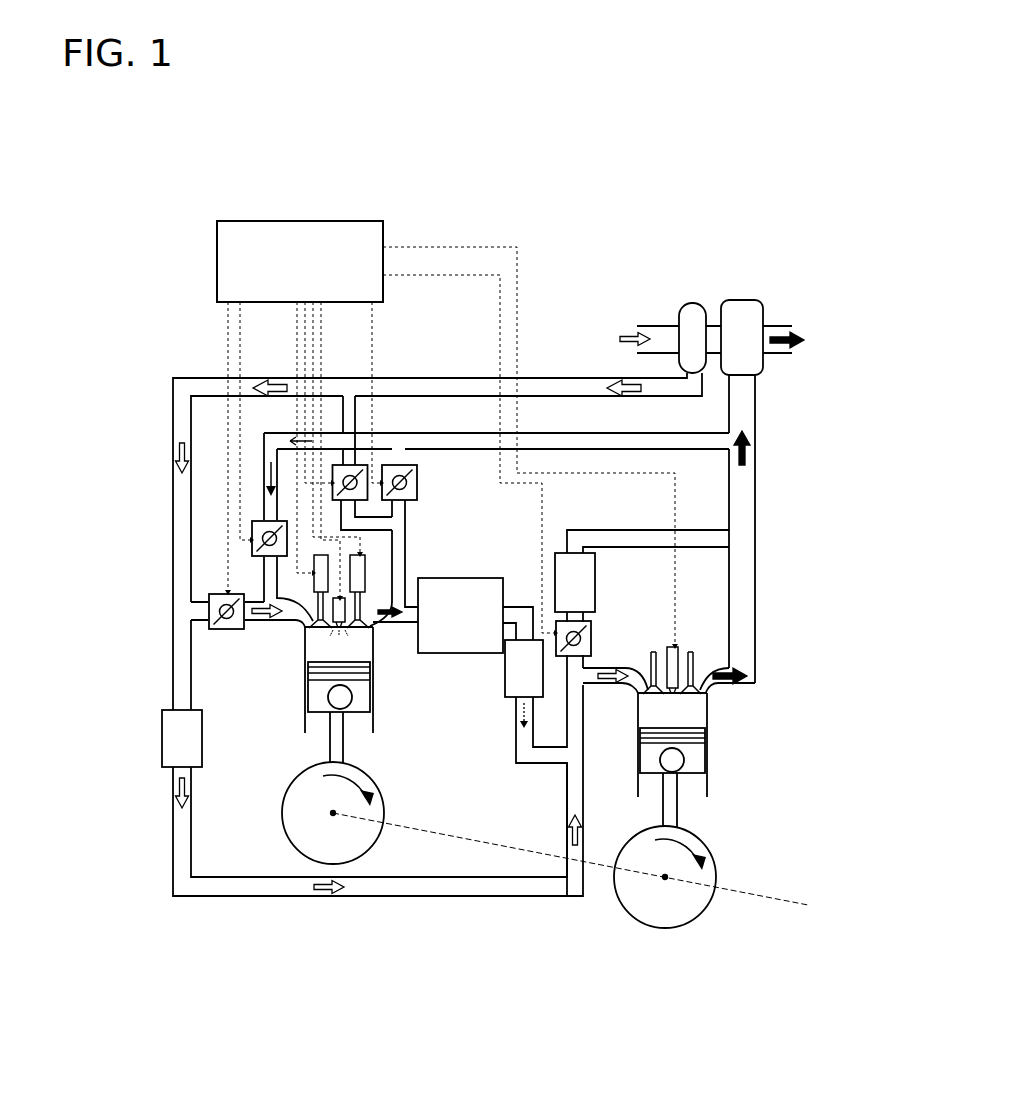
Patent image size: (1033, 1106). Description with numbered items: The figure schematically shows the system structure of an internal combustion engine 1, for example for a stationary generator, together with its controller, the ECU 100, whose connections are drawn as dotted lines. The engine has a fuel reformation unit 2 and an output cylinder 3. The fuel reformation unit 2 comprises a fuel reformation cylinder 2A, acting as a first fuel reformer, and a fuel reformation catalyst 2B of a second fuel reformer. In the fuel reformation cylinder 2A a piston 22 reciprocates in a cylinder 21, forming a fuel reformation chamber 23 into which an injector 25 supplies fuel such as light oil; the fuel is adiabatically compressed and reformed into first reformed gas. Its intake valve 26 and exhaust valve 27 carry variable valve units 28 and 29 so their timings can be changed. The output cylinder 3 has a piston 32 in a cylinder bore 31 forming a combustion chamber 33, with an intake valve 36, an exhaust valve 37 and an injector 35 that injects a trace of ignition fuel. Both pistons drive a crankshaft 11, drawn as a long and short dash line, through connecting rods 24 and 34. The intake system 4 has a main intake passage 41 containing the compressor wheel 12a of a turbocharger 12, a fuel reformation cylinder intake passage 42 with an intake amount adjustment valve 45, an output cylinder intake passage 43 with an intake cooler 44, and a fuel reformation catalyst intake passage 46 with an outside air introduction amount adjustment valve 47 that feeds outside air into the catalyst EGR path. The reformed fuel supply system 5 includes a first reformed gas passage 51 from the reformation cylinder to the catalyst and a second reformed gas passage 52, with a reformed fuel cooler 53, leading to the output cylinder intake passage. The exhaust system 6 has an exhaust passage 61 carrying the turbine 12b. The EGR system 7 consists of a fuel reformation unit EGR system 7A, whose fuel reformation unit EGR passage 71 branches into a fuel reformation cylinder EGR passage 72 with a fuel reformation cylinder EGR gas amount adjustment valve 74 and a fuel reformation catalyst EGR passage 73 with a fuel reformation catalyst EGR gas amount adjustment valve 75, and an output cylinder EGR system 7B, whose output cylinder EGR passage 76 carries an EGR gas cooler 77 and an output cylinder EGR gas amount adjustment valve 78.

The internal combustion engine 1 is at (146, 277).
The ECU 100 is at (328, 220).
The intake system 4 is at (407, 355).
The main intake passage 41 is at (445, 376).
The output cylinder intake passage 43 is at (466, 897).
The intake cooler 44 is at (162, 742).
The intake amount adjustment valve 45 is at (233, 632).
The crankshaft 11 is at (555, 884).
The turbocharger 12 is at (712, 290).
The compressor wheel 12a is at (691, 301).
The turbine 12b is at (747, 313).
The exhaust system 6 is at (768, 529).
The exhaust passage 61 is at (748, 578).
The EGR system 7 is at (496, 508).
The fuel reformation unit EGR system 7A is at (496, 464).
The output cylinder EGR system 7B is at (648, 540).
The fuel reformation unit EGR passage 71 is at (473, 443).
The fuel reformation cylinder EGR passage 72 is at (266, 462).
The fuel reformation catalyst EGR passage 73 is at (400, 548).
The fuel reformation cylinder EGR gas amount adjustment valve 74 is at (252, 546).
The fuel reformation catalyst EGR gas amount adjustment valve 75 is at (418, 482).
The output cylinder EGR passage 76 is at (640, 537).
The EGR gas cooler 77 is at (586, 597).
The output cylinder EGR gas amount adjustment valve 78 is at (598, 641).
The fuel reformation catalyst intake passage 46 is at (355, 408).
The outside air introduction amount adjustment valve 47 is at (370, 502).
The fuel reformation unit 2 is at (356, 702).
The fuel reformation cylinder 2A is at (388, 717).
The fuel reformation catalyst 2B is at (452, 730).
The cylinder 21 is at (372, 664).
The piston 22 is at (368, 694).
The fuel reformation chamber 23 is at (308, 662).
The connecting rod 24 is at (330, 745).
The injector 25 is at (356, 614).
The intake valve 26 is at (322, 637).
The exhaust valve 27 is at (366, 637).
The variable valve unit 28 is at (314, 583).
The variable valve unit 29 is at (363, 572).
The fuel reformation cylinder intake passage 42 is at (292, 618).
The reformed fuel supply system 5 is at (510, 746).
The first reformed gas passage 51 is at (416, 592).
The second reformed gas passage 52 is at (513, 606).
The reformed fuel cooler 53 is at (466, 666).
The output cylinder 3 is at (676, 759).
The cylinder bore 31 is at (642, 715).
The piston 32 is at (644, 760).
The combustion chamber 33 is at (695, 712).
The connecting rod 34 is at (678, 810).
The injector 35 is at (676, 640).
The intake valve 36 is at (653, 648).
The exhaust valve 37 is at (693, 649).